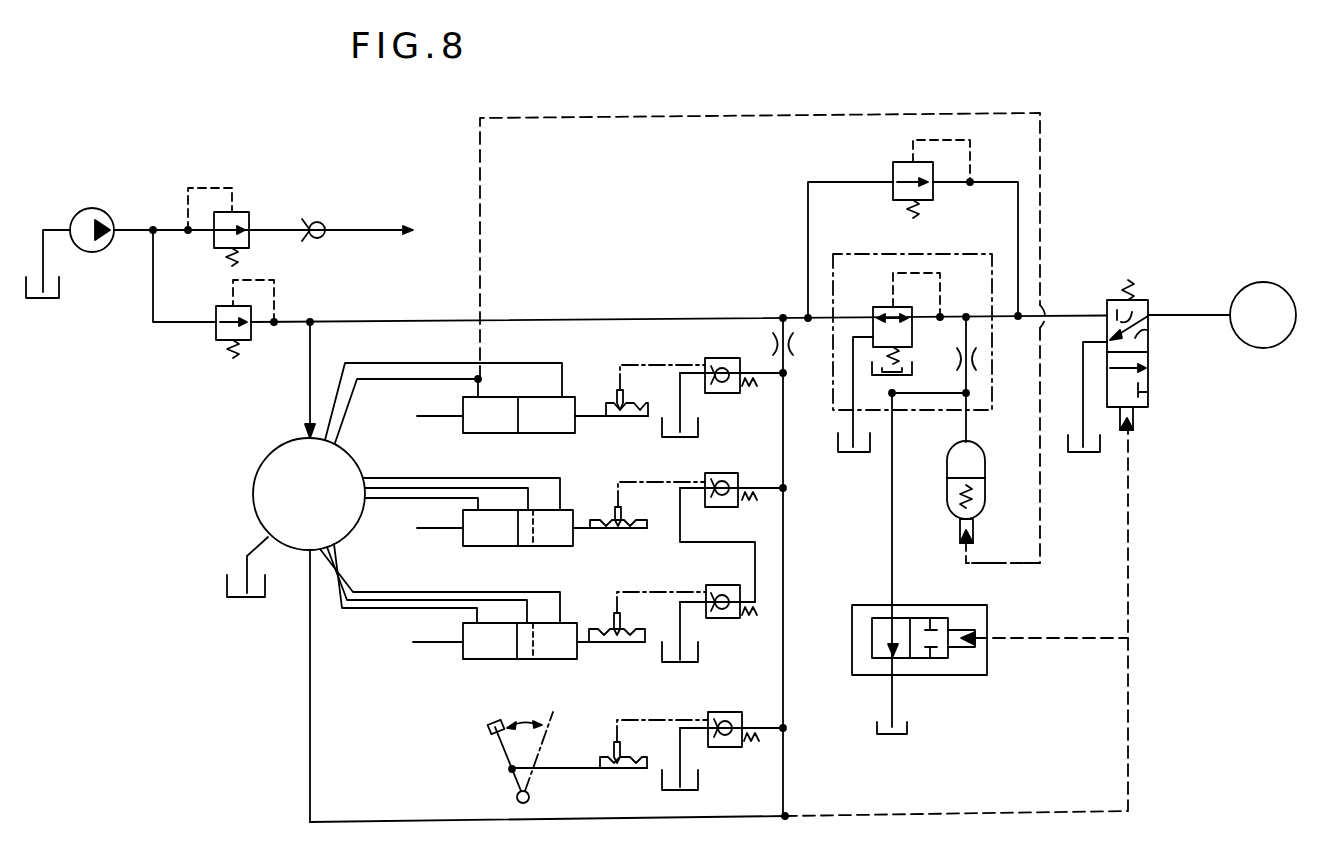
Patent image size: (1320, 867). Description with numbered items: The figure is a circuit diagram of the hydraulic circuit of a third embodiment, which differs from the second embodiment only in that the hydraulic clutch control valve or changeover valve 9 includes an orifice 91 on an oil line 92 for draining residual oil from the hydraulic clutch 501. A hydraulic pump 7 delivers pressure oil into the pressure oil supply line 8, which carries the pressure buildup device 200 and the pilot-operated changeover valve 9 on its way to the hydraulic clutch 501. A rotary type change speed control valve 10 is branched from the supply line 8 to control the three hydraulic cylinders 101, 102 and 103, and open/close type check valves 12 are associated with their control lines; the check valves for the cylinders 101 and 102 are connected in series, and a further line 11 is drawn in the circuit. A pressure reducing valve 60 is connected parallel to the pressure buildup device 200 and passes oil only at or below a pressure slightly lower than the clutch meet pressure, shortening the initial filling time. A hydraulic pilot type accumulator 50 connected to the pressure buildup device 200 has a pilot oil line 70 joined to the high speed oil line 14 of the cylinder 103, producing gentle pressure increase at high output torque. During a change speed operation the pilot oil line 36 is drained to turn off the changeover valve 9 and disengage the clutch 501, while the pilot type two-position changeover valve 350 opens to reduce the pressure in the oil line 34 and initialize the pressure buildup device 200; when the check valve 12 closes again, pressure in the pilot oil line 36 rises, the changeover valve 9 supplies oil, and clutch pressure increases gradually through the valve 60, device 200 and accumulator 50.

The hydraulic pump 7 is at (100, 210).
The pressure oil supply line 8 is at (450, 320).
The changeover valve 9 is at (1170, 375).
The rotary type change speed control valve 10 is at (296, 572).
The return line 11 is at (783, 572).
The check valve 12 is at (732, 393).
The high speed oil line 14 is at (383, 382).
The oil line 34 is at (890, 500).
The pilot oil line 36 is at (967, 813).
The hydraulic pilot type accumulator 50 is at (943, 470).
The pressure reducing valve 60 is at (893, 175).
The pilot oil line 70 is at (763, 117).
The orifice 91 is at (1147, 335).
The oil line 92 is at (1083, 403).
The hydraulic cylinder 101 is at (497, 546).
The hydraulic cylinder 102 is at (477, 660).
The hydraulic cylinder 103 is at (505, 433).
The pressure buildup device 200 is at (962, 250).
The two-position changeover valve 350 is at (927, 658).
The hydraulic clutch 501 is at (1263, 315).